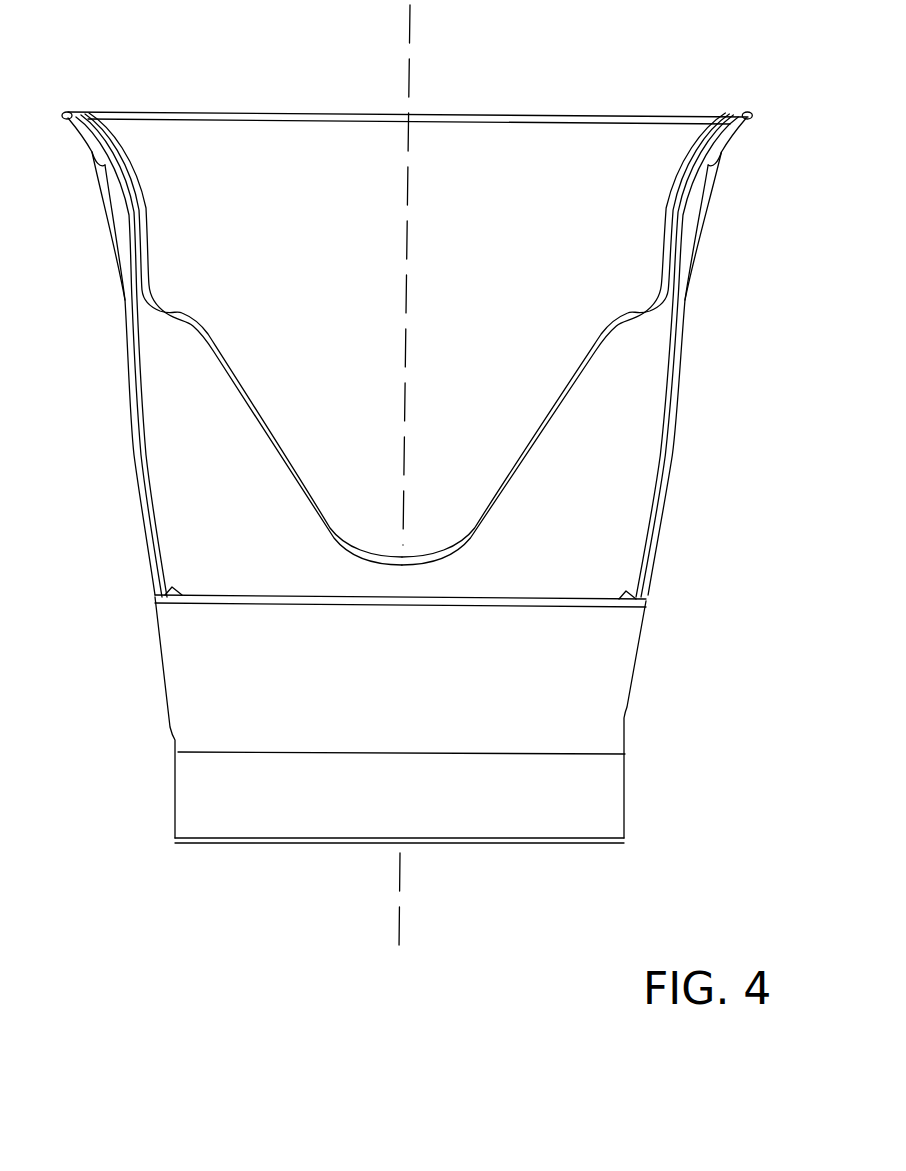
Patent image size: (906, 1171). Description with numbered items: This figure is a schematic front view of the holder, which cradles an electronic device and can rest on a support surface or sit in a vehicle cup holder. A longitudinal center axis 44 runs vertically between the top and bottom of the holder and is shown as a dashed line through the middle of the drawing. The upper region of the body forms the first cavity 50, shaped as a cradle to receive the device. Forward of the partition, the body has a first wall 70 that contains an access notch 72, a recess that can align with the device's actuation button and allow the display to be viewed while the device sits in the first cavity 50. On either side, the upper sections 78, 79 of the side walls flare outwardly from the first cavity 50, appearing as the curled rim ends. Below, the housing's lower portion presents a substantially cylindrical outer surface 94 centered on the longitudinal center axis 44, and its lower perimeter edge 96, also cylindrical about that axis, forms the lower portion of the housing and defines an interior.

The longitudinal center axis 44 is at (412, 27).
The first cavity 50 is at (537, 155).
The first wall 70 is at (218, 472).
The access notch 72 is at (327, 528).
The upper section of side wall 78 is at (130, 153).
The upper section of side wall 79 is at (688, 147).
The outer surface 94 is at (628, 700).
The lower perimeter edge 96 is at (563, 600).